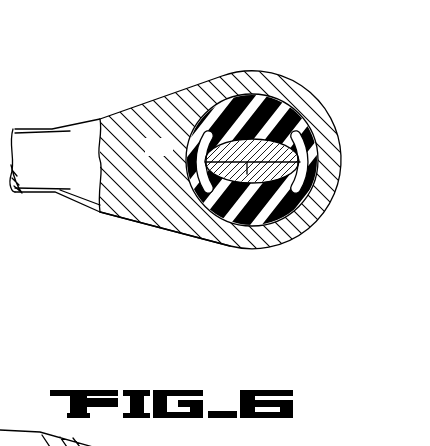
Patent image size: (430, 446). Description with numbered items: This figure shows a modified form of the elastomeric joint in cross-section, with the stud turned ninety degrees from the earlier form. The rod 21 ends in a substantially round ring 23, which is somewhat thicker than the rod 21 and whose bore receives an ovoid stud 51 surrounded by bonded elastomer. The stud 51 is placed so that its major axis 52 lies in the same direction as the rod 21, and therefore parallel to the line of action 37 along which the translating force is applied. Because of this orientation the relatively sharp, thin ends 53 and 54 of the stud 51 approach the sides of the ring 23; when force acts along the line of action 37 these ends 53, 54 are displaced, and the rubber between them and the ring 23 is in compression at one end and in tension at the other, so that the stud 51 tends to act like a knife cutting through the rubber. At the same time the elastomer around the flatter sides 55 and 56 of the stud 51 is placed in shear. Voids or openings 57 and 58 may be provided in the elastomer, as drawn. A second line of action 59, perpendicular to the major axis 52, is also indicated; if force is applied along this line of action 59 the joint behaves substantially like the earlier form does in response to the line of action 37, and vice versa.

The rod 21 is at (46, 139).
The line of action 37 is at (31, 163).
The ring 23 is at (328, 163).
The stud 51 is at (282, 128).
The major axis 52 is at (203, 230).
The sharp end 53 is at (296, 157).
The sharp end 54 is at (192, 161).
The flatter side 55 is at (258, 142).
The flatter side 56 is at (200, 205).
The void 57 is at (310, 175).
The void 58 is at (172, 200).
The line of action 59 is at (240, 64).